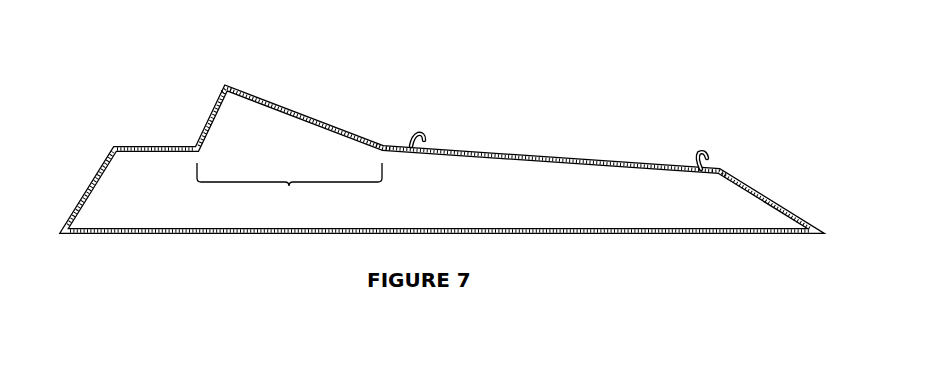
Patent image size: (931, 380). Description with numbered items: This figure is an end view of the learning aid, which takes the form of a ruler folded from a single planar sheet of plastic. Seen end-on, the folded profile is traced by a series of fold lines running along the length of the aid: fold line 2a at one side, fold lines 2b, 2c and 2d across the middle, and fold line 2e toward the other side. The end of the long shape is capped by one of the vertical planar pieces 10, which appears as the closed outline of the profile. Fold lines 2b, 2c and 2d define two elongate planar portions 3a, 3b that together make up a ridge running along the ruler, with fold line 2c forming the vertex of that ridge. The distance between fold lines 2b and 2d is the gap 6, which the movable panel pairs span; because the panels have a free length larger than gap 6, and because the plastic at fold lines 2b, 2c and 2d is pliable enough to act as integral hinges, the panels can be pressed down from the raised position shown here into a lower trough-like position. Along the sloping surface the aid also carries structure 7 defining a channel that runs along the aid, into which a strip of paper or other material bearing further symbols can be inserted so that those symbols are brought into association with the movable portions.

The vertical planar pieces 10 is at (467, 207).
The fold line 2a is at (114, 146).
The fold line 2b is at (196, 146).
The elongate planar portion 3a is at (213, 112).
The fold line 2c is at (226, 86).
The elongate planar portion 3b is at (285, 107).
The fold line 2d is at (387, 145).
The fold line 2e is at (720, 169).
The structure defining a channel 7 is at (440, 140).
The gap 6 is at (289, 186).